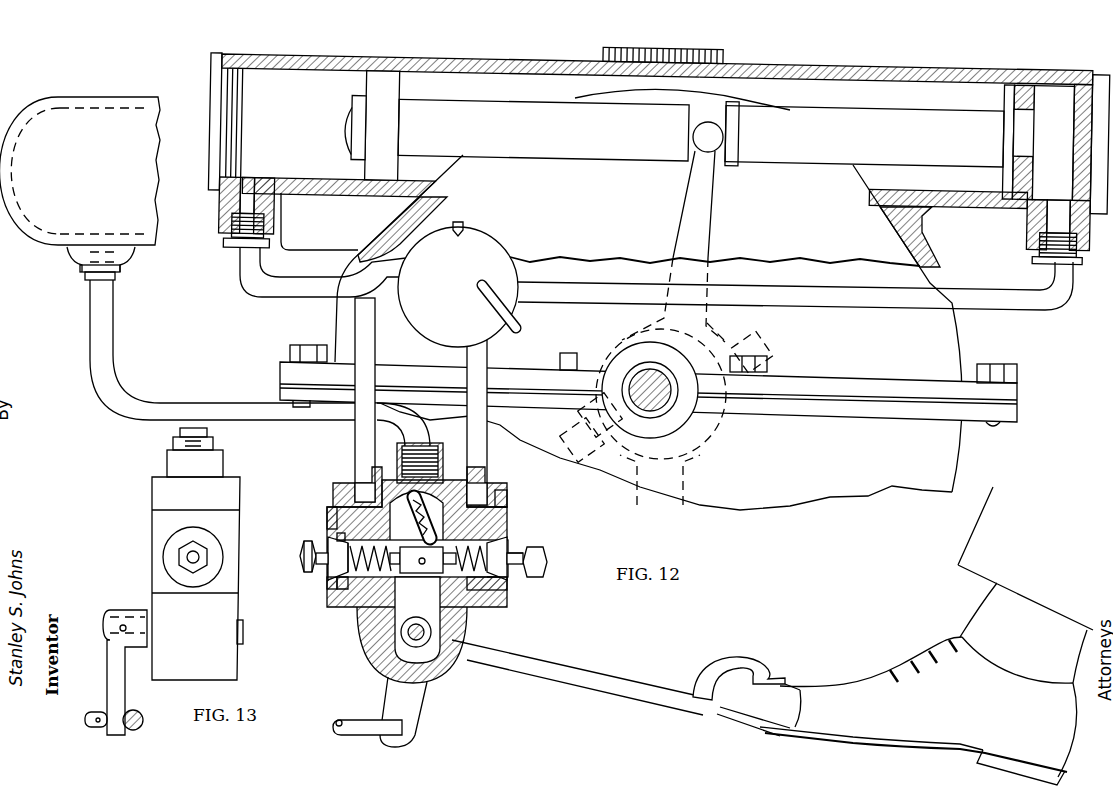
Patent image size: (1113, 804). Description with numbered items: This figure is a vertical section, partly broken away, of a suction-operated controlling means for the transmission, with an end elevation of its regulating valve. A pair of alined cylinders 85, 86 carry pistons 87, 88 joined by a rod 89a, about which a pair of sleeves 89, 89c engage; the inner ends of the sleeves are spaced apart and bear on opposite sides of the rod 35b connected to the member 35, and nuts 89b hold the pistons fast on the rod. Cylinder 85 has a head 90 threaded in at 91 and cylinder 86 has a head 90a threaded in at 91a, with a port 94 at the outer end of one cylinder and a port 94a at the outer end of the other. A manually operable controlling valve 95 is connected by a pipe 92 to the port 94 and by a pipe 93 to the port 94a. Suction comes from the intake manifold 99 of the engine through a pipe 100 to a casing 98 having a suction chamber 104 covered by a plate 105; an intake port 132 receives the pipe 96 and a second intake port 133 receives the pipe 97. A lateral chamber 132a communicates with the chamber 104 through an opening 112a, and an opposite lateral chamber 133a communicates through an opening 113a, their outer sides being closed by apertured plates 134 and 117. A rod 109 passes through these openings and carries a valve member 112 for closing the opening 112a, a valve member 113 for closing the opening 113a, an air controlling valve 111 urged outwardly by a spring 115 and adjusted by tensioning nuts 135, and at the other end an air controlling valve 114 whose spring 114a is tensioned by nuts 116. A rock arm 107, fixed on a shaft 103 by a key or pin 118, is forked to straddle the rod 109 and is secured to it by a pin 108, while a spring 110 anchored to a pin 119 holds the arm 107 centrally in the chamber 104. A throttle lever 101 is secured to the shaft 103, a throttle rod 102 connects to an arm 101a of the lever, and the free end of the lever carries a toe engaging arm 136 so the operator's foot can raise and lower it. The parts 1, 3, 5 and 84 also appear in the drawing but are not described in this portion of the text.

In FIG. 12, the transmission housing 1 is at (850, 487).
In FIG. 12, the clutch block 3 is at (637, 420).
In FIG. 12, the shaft 5 is at (662, 400).
In FIG. 12, the member connected to rod 35b 35 is at (672, 484).
In FIG. 12, the rod 35b is at (702, 200).
In FIG. 12, the rack 84 is at (695, 40).
In FIG. 12, the cylinder 85 is at (352, 78).
In FIG. 12, the cylinder 86 is at (1030, 58).
In FIG. 12, the piston 87 is at (372, 103).
In FIG. 12, the piston 88 is at (1010, 85).
In FIG. 12, the sleeve 89 is at (561, 134).
In FIG. 12, the rod 89a is at (1028, 120).
In FIG. 12, the nuts 89b is at (1043, 152).
In FIG. 12, the sleeve 89c is at (797, 120).
In FIG. 12, the head 90 is at (218, 82).
In FIG. 12, the head 90a is at (1103, 60).
In FIG. 12, the threaded connection 91 is at (237, 58).
In FIG. 12, the threaded connection 91a is at (1052, 78).
In FIG. 12, the pipe 92 is at (284, 295).
In FIG. 12, the pipe 93 is at (850, 305).
In FIG. 12, the port 94 is at (250, 195).
In FIG. 12, the port 94a is at (1085, 222).
In FIG. 12, the manually operable controlling valve 95 is at (492, 252).
In FIG. 12, the pipe 96 is at (377, 340).
In FIG. 12, the pipe 97 is at (490, 413).
In FIG. 12, the casing 98 is at (345, 490).
In FIG. 13, the casing 98 is at (155, 491).
In FIG. 12, the intake manifold 99 is at (47, 238).
In FIG. 12, the pipe 100 is at (102, 345).
In FIG. 13, the pipe 100 is at (185, 430).
In FIG. 12, the throttle lever 101 is at (560, 667).
In FIG. 12, the arm 101a is at (410, 707).
In FIG. 12, the throttle rod 102 is at (352, 725).
In FIG. 13, the throttle rod 102 is at (135, 716).
In FIG. 12, the shaft 103 is at (403, 637).
In FIG. 13, the shaft 103 is at (109, 627).
In FIG. 12, the suction chamber 104 is at (397, 612).
In FIG. 12, the plate 105 is at (340, 540).
In FIG. 12, the rock arm 107 is at (423, 600).
In FIG. 12, the pin 108 is at (343, 607).
In FIG. 12, the rod 109 is at (300, 560).
In FIG. 13, the rod 109 is at (208, 553).
In FIG. 12, the spring 110 is at (480, 543).
In FIG. 12, the valve member 111 is at (342, 540).
In FIG. 12, the valve member 112 is at (335, 584).
In FIG. 12, the opening 112a is at (406, 521).
In FIG. 12, the valve member 113 is at (503, 585).
In FIG. 12, the opening 113a is at (511, 595).
In FIG. 12, the valve 114 is at (512, 552).
In FIG. 12, the spring 114a is at (520, 560).
In FIG. 12, the spring 115 is at (336, 528).
In FIG. 12, the nuts 116 is at (547, 569).
In FIG. 12, the apertured plate 117 is at (508, 550).
In FIG. 12, the key or pin 118 is at (424, 655).
In FIG. 12, the pin 119 is at (373, 493).
In FIG. 12, the intake port 132 is at (330, 517).
In FIG. 12, the lateral chamber 132a is at (325, 580).
In FIG. 12, the intake port 133 is at (490, 517).
In FIG. 12, the lateral chamber 133a is at (493, 540).
In FIG. 12, the apertured plate 134 is at (337, 538).
In FIG. 12, the tensioning nuts 135 is at (300, 547).
In FIG. 13, the tensioning nuts 135 is at (203, 563).
In FIG. 12, the toe engaging arm 136 is at (755, 665).